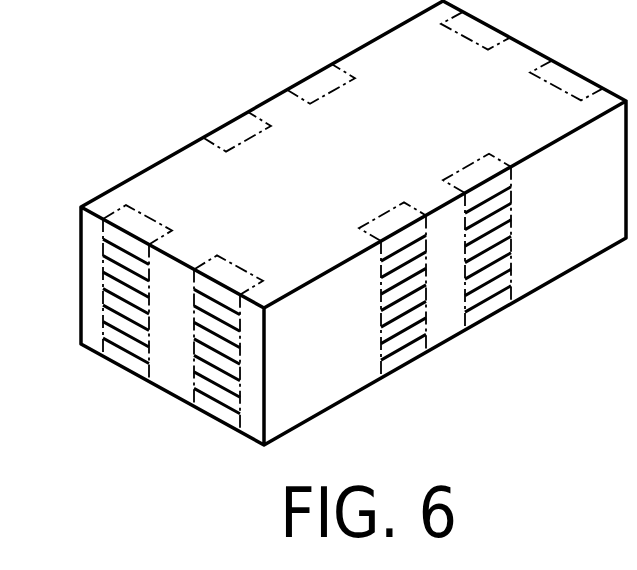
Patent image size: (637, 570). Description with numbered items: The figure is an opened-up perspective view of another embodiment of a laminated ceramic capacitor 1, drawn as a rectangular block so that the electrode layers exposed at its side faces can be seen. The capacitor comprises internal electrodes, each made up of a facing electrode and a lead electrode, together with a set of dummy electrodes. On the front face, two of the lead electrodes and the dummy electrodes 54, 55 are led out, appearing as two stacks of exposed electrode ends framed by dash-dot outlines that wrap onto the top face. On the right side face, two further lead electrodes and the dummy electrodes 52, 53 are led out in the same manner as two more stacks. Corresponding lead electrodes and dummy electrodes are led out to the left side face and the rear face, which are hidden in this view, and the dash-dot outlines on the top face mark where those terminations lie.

The laminated ceramic capacitor 1 is at (95, 252).
The dummy electrode 52 is at (484, 305).
The dummy electrode 53 is at (400, 348).
The dummy electrode 54 is at (225, 408).
The dummy electrode 55 is at (134, 356).